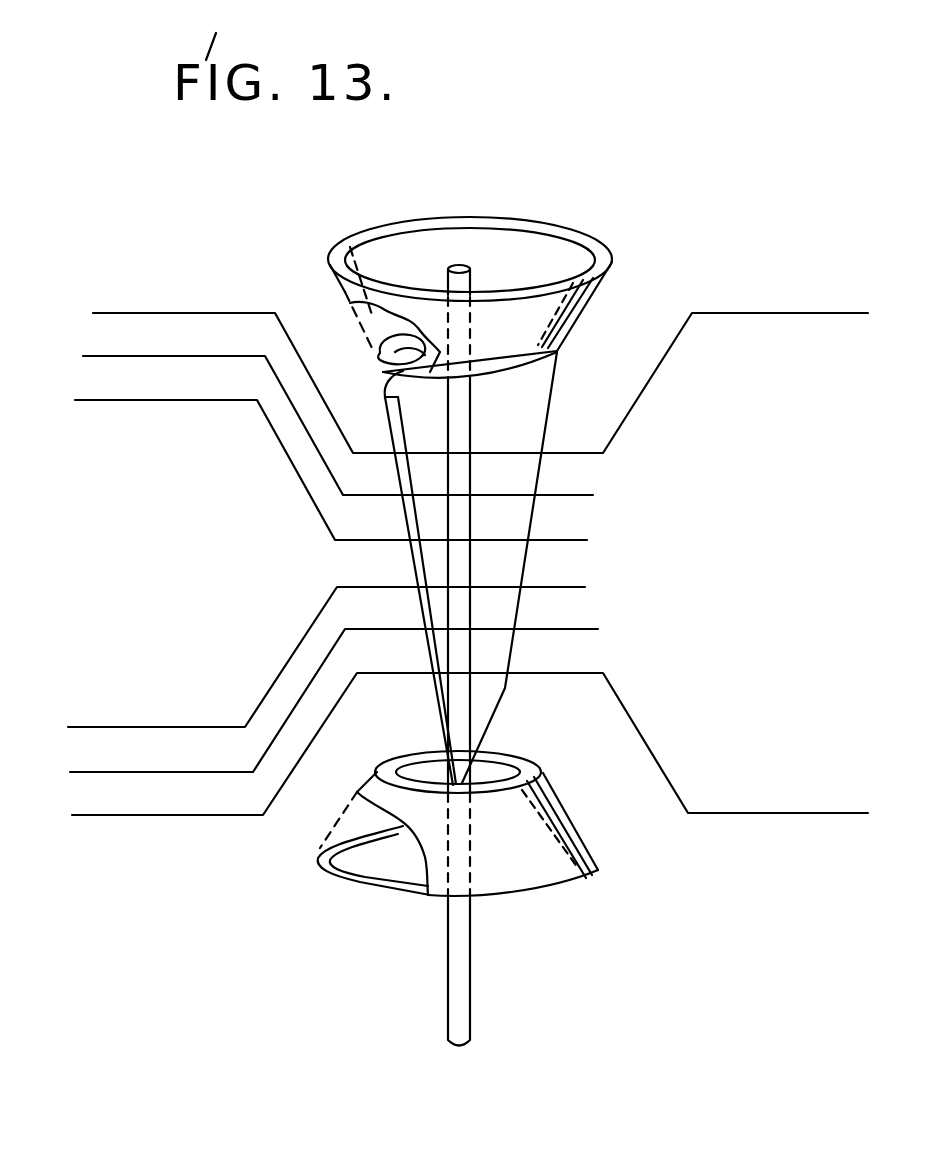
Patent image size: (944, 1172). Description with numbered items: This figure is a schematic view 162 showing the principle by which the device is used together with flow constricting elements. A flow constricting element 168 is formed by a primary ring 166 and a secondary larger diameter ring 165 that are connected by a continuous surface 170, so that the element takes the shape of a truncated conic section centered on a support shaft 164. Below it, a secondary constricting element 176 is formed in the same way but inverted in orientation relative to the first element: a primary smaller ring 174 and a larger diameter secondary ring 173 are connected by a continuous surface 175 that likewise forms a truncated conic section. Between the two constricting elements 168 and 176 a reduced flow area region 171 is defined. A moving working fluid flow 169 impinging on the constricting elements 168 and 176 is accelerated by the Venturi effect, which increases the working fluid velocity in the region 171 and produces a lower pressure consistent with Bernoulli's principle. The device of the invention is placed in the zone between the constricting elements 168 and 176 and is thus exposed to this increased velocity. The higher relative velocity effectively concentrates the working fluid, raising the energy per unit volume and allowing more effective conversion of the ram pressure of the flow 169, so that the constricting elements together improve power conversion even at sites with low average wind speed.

The view 162 is at (212, 210).
The support shaft 164 is at (470, 985).
The secondary larger diameter ring 165 is at (340, 247).
The primary ring 166 is at (382, 352).
The flow constricting element 168 is at (612, 204).
The moving working fluid flow 169 is at (246, 451).
The continuous surface 170 is at (538, 313).
The reduced flow area region 171 is at (431, 568).
The larger diameter secondary ring 173 is at (335, 870).
The primary smaller ring 174 is at (392, 763).
The continuous surface 175 is at (527, 822).
The secondary constricting element 176 is at (584, 894).